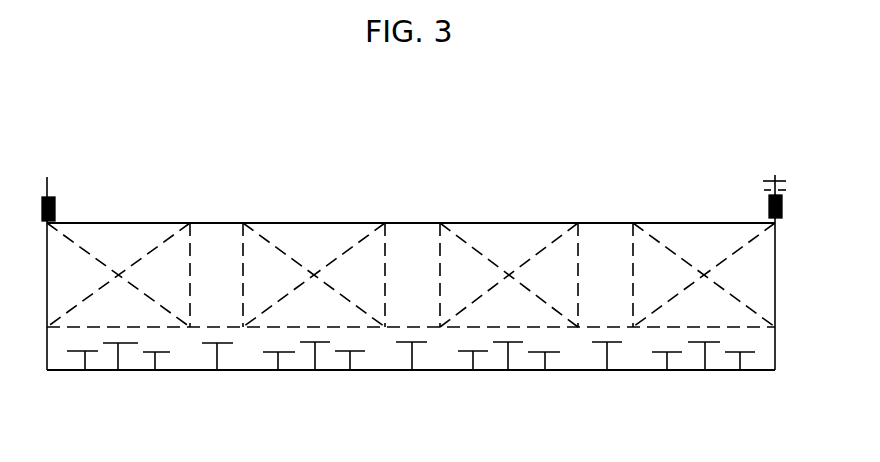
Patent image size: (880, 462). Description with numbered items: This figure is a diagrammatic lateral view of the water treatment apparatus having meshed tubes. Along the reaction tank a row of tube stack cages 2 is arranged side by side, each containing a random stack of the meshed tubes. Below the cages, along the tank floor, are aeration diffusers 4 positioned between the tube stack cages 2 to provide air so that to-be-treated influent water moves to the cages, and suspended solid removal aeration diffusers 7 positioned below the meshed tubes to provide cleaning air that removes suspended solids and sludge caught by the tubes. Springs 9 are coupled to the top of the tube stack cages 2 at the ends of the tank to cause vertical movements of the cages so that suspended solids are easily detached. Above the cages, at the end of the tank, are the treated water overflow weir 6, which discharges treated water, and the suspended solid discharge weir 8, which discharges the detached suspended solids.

The tube stack cage 2 is at (477, 198).
The aeration diffuser 4 is at (212, 343).
The treated water overflow weir 6 is at (763, 181).
The suspended solid removal aeration diffuser 7 is at (143, 352).
The suspended solid discharge weir 8 is at (761, 193).
The spring 9 is at (55, 210).